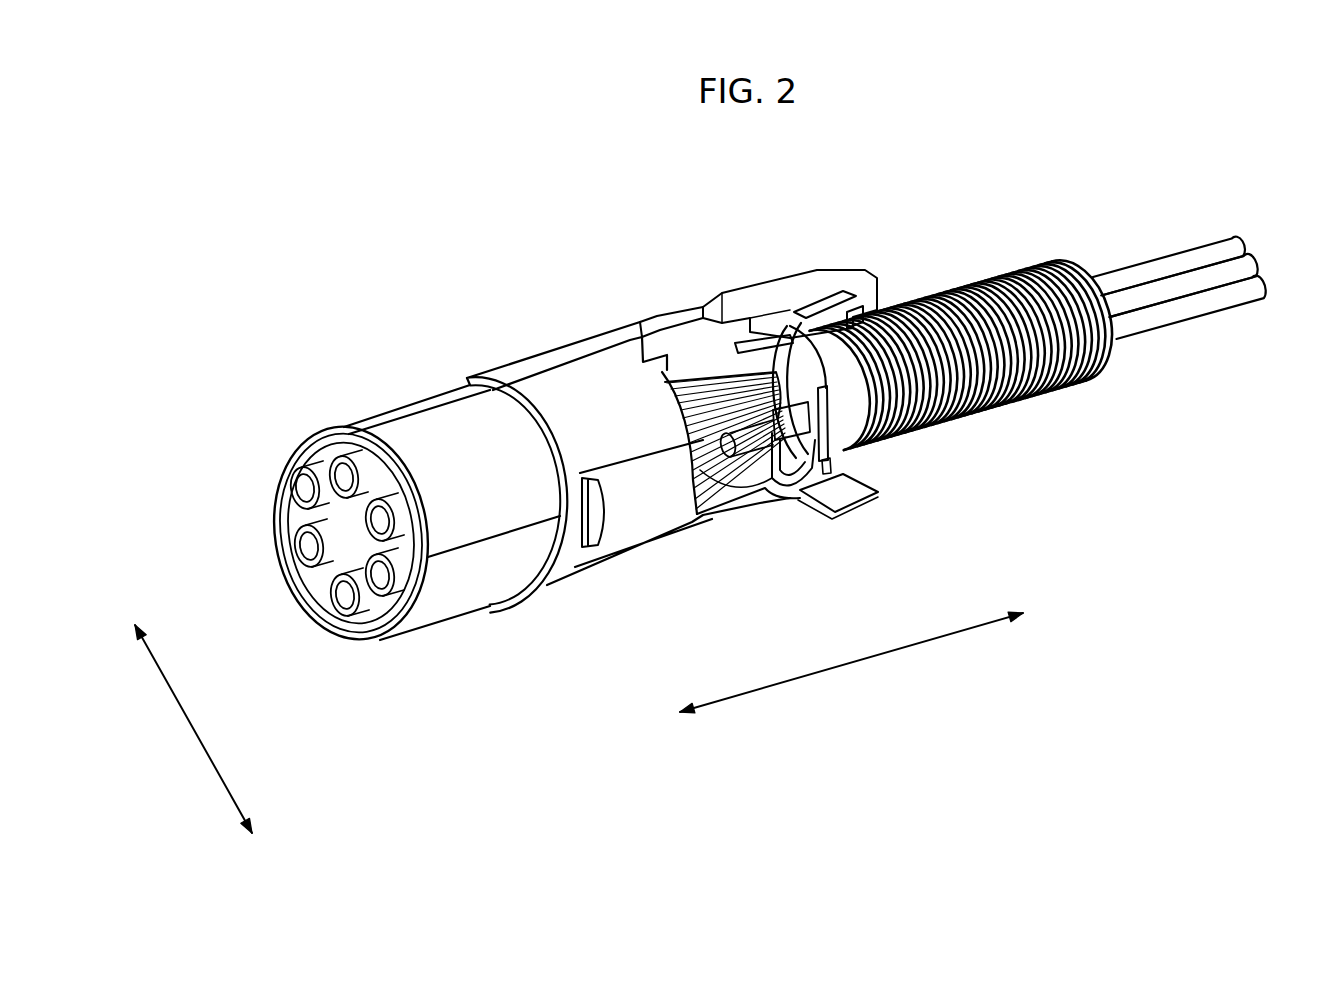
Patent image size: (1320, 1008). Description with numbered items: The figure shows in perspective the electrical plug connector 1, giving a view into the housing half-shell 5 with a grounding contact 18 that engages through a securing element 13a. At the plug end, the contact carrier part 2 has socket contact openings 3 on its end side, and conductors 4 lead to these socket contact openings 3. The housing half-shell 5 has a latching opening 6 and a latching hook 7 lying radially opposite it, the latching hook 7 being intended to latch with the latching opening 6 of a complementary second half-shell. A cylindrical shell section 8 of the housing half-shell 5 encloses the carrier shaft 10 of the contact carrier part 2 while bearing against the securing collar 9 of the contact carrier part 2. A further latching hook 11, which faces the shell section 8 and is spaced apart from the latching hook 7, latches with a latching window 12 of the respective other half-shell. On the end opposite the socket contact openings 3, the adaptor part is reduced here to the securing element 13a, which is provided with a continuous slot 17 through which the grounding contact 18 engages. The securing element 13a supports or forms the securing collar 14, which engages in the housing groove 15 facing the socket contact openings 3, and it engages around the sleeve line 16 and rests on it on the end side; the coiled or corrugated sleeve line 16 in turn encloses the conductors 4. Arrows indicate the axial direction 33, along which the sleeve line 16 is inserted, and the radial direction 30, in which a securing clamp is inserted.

The electrical plug connector 1 is at (437, 271).
The contact carrier part 2 is at (405, 427).
The socket contact openings 3 is at (300, 491).
The conductors 4 is at (700, 395).
The housing half-shell 5 is at (770, 290).
The latching opening 6 is at (823, 297).
The latching hook 7 is at (860, 510).
The cylindrical shell section 8 is at (523, 352).
The securing collar 9 is at (512, 613).
The carrier shaft 10 is at (588, 405).
The further latching hook 11 is at (662, 360).
The latching window 12 is at (691, 538).
The securing element 13a is at (827, 453).
The securing collar 14 is at (795, 482).
The housing groove 15 is at (780, 497).
The sleeve line 16 is at (975, 277).
The continuous slot 17 is at (784, 325).
The grounding contact 18 is at (740, 345).
The radial direction 30 is at (214, 758).
The axial direction 33 is at (878, 655).